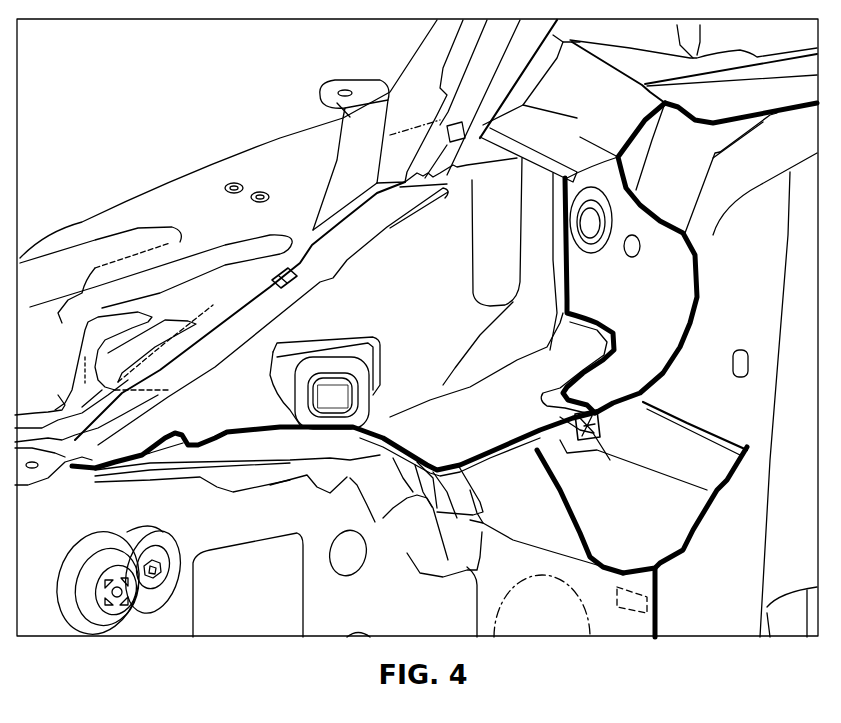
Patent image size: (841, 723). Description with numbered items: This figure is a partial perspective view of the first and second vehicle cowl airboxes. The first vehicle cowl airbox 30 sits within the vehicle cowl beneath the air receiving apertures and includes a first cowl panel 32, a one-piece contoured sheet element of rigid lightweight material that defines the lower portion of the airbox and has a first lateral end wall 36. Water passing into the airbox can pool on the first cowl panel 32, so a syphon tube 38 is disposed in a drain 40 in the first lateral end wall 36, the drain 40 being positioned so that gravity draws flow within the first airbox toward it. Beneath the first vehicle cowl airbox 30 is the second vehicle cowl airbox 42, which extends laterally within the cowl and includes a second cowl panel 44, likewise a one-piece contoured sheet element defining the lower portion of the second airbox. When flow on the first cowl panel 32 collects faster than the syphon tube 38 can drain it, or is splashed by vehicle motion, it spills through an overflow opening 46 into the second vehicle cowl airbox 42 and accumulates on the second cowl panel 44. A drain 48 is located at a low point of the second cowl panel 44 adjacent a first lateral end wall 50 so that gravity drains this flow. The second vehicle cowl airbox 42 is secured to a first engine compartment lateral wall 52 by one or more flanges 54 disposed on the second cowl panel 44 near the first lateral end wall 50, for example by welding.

The first vehicle cowl airbox 30 is at (755, 242).
The first cowl panel 32 is at (672, 300).
The first lateral end wall 36 is at (436, 343).
The syphon tube 38 is at (337, 409).
The drain 40 is at (346, 354).
The second vehicle cowl airbox 42 is at (754, 440).
The second cowl panel 44 is at (688, 421).
The overflow opening 46 is at (538, 220).
The drain 48 is at (432, 512).
The first lateral end wall 50 is at (418, 502).
The first engine compartment lateral wall 52 is at (396, 519).
The flanges 54 is at (376, 489).